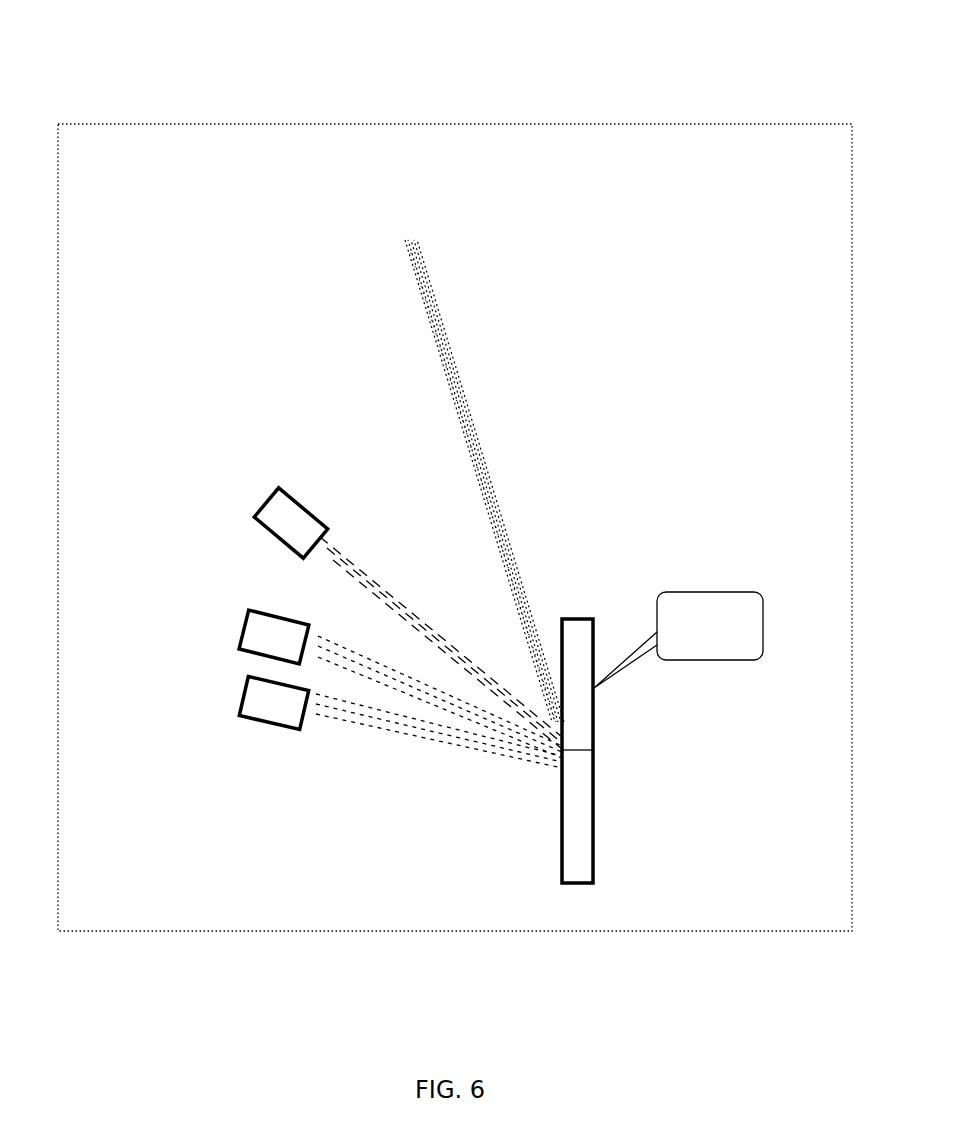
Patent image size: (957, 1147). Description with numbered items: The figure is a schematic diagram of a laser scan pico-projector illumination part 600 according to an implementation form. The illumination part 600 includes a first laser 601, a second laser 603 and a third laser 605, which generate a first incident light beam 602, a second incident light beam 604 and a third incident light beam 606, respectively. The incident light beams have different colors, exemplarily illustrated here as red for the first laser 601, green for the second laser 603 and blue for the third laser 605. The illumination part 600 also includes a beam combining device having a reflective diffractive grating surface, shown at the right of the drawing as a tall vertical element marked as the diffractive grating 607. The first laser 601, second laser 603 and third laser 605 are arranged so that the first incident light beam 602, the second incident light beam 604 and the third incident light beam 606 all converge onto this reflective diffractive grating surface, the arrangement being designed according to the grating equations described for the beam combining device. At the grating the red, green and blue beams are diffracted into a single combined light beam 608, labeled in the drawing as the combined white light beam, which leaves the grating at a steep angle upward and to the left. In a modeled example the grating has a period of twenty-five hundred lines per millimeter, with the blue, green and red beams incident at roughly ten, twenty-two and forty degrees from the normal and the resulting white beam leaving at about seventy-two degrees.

The laser scan pico-projector illumination part 600 is at (316, 116).
The first laser 601 is at (276, 516).
The first incident light beam 602 is at (386, 612).
The second laser 603 is at (265, 645).
The second incident light beam 604 is at (407, 695).
The third laser 605 is at (262, 712).
The third incident light beam 606 is at (460, 752).
The diffractive grating 607 is at (576, 590).
The combined light beam 608 is at (392, 277).